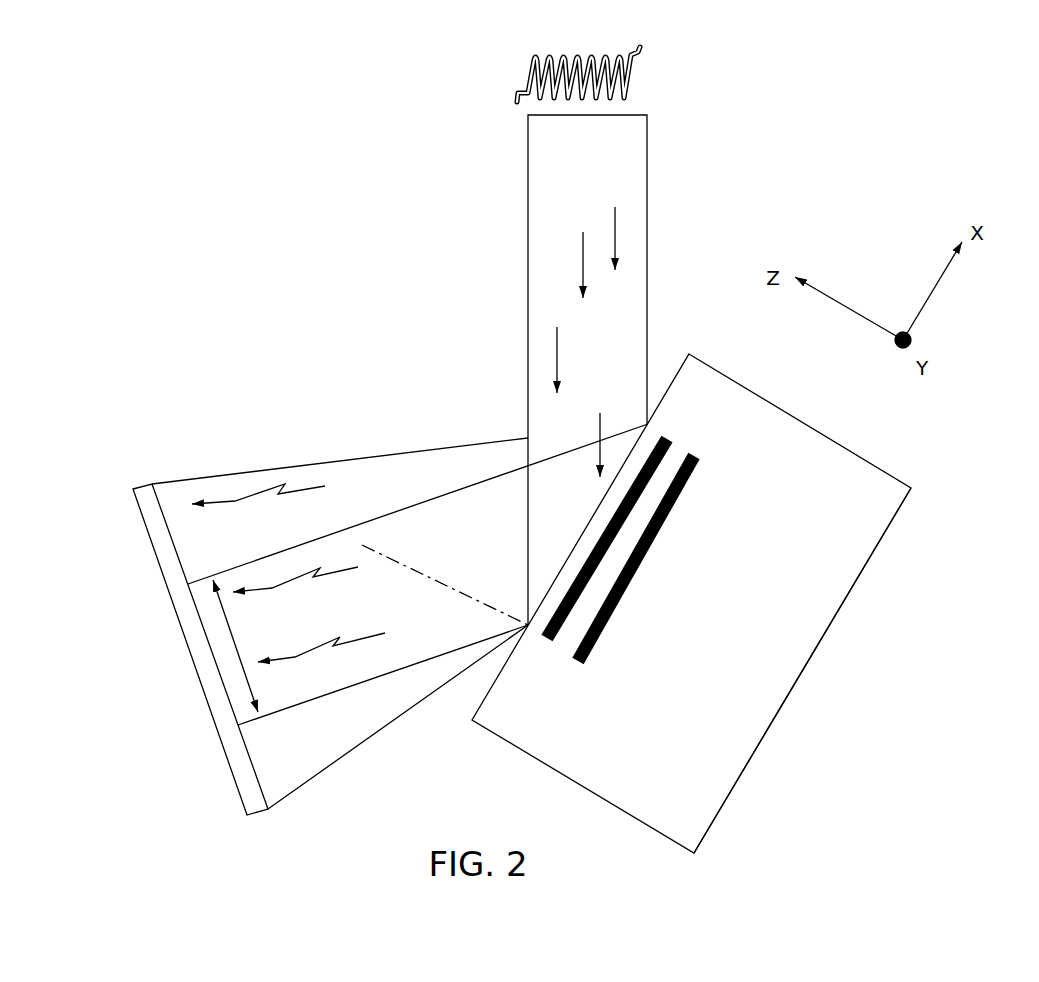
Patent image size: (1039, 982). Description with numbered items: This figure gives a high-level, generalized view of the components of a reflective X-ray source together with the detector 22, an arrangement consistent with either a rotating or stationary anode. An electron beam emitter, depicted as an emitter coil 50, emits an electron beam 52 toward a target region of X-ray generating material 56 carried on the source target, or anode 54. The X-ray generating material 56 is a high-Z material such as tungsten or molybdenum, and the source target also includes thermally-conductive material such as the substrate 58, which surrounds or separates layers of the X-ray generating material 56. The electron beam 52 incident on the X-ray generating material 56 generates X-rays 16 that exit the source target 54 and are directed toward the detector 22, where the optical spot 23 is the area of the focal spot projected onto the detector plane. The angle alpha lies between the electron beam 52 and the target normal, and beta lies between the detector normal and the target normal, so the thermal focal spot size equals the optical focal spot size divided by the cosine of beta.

The emitter coil 50 is at (512, 77).
The electron beam 52 is at (528, 247).
The anode 54 is at (913, 565).
The X-ray generating material 56 is at (658, 424).
The substrate 58 is at (780, 705).
The detector 22 is at (137, 481).
The optical spot 23 is at (232, 637).
The X-rays 16 is at (343, 700).